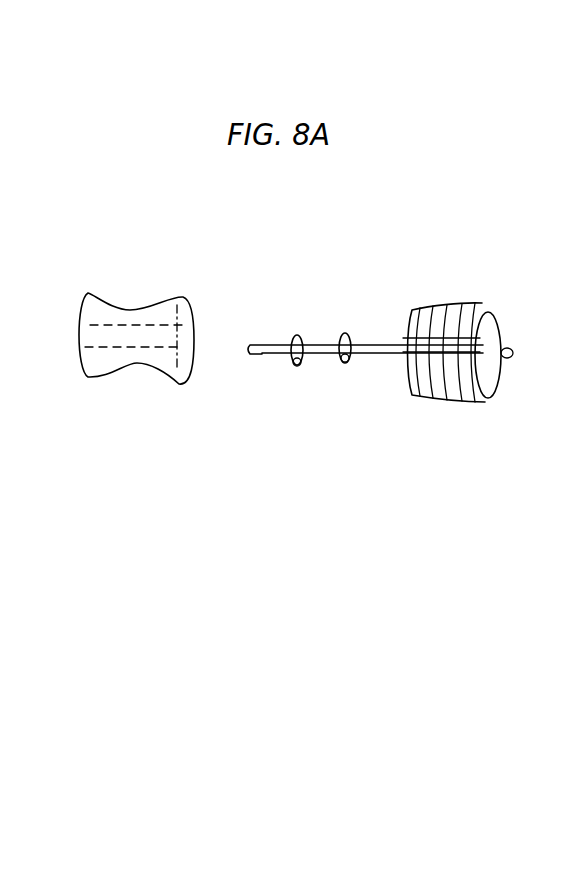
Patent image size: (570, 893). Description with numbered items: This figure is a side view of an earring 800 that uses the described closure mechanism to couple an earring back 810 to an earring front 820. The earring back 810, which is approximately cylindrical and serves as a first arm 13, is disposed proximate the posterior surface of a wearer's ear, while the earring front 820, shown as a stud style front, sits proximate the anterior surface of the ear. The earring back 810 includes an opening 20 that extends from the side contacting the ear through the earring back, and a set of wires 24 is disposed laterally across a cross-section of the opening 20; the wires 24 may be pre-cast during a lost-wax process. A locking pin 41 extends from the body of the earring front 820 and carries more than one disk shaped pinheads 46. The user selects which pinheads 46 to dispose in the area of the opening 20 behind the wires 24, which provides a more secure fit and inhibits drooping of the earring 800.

The earring back 810 is at (130, 310).
The set of wires 24 is at (183, 312).
The opening 20 is at (147, 338).
The first arm 13 is at (100, 362).
The locking pin 41 is at (365, 343).
The pinheads 46 is at (343, 337).
The earring front 820 is at (458, 393).
The earring 800 is at (287, 410).